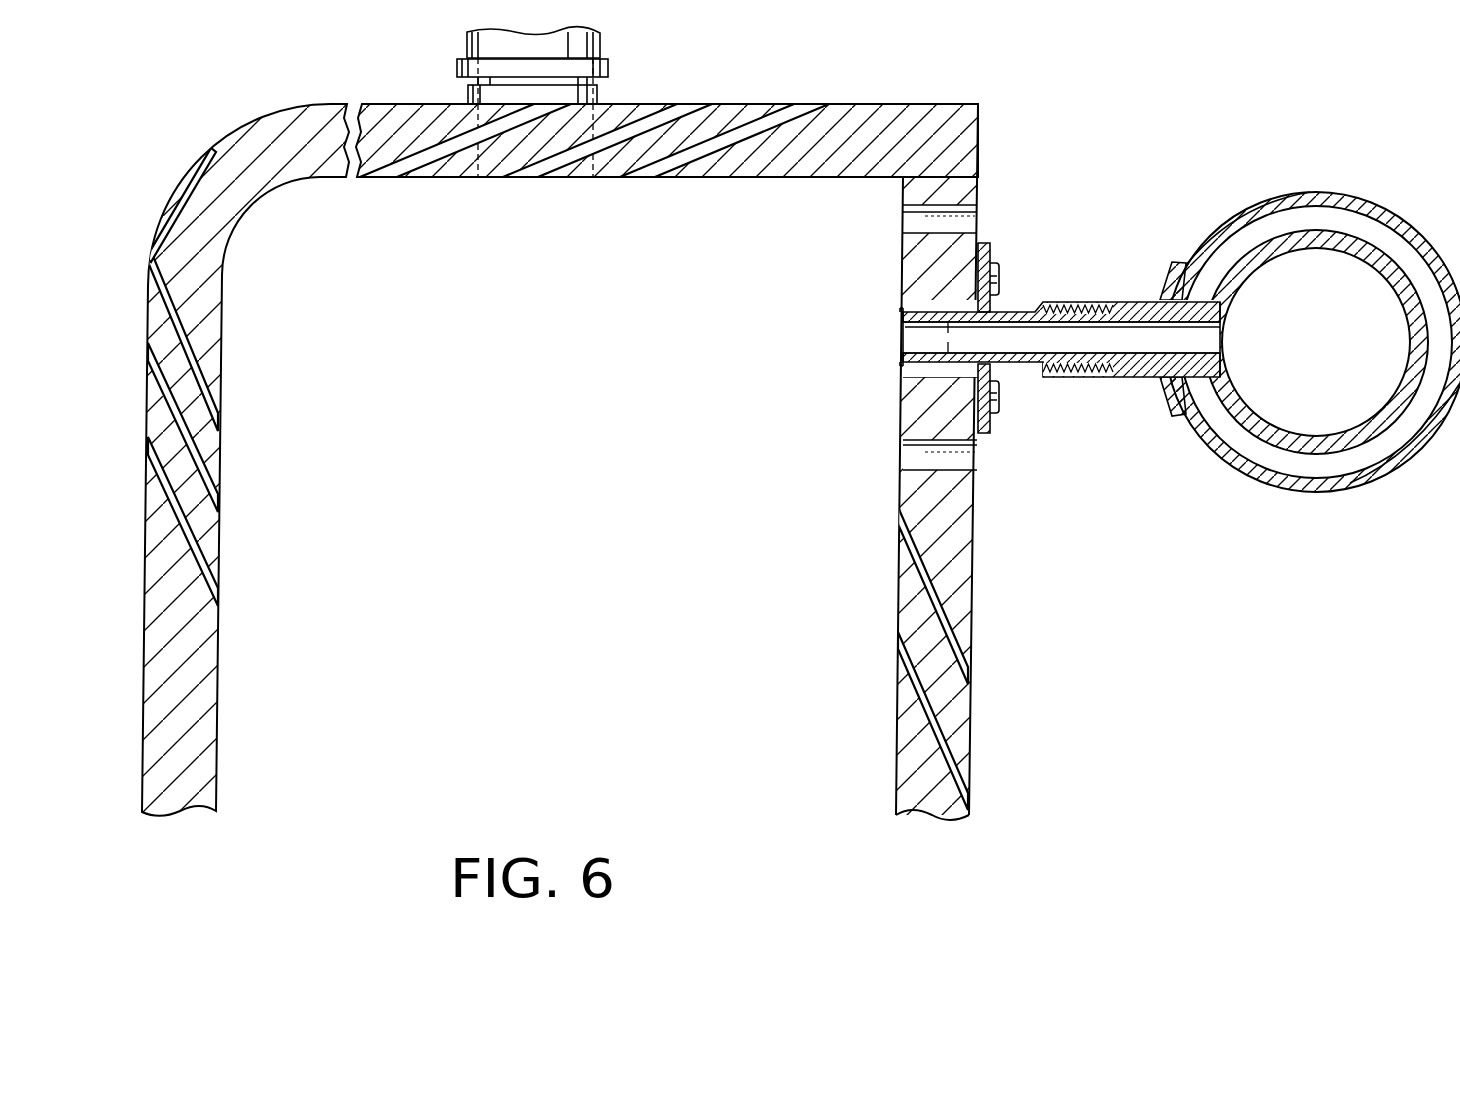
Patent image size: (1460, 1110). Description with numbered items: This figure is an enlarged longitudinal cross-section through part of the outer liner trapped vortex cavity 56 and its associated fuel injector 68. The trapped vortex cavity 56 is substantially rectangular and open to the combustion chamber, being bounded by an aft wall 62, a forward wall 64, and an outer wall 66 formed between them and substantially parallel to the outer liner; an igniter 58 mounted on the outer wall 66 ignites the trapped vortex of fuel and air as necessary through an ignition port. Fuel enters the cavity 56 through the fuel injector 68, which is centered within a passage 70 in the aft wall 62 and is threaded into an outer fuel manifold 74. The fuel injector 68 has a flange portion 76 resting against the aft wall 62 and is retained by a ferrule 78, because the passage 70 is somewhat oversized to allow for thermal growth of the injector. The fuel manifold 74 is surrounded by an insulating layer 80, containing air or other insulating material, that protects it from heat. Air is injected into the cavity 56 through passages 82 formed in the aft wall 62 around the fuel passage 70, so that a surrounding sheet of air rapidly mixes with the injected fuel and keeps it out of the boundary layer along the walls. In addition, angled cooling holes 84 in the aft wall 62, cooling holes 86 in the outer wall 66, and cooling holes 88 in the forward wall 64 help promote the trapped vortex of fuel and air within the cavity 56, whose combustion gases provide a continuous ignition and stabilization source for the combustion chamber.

The trapped vortex cavity 56 is at (540, 417).
The igniter 58 is at (600, 37).
The aft wall 62 is at (968, 552).
The forward wall 64 is at (203, 683).
The outer wall 66 is at (730, 112).
The fuel injector 68 is at (1019, 314).
The passage 70 is at (903, 310).
The fuel manifold 74 is at (1318, 232).
The flange portion 76 is at (990, 370).
The ferrule 78 is at (988, 262).
The insulating layer 80 is at (1255, 236).
The air passages 82 is at (905, 212).
The cooling holes 84 is at (930, 702).
The cooling holes 86 is at (835, 148).
The cooling holes 88 is at (185, 395).